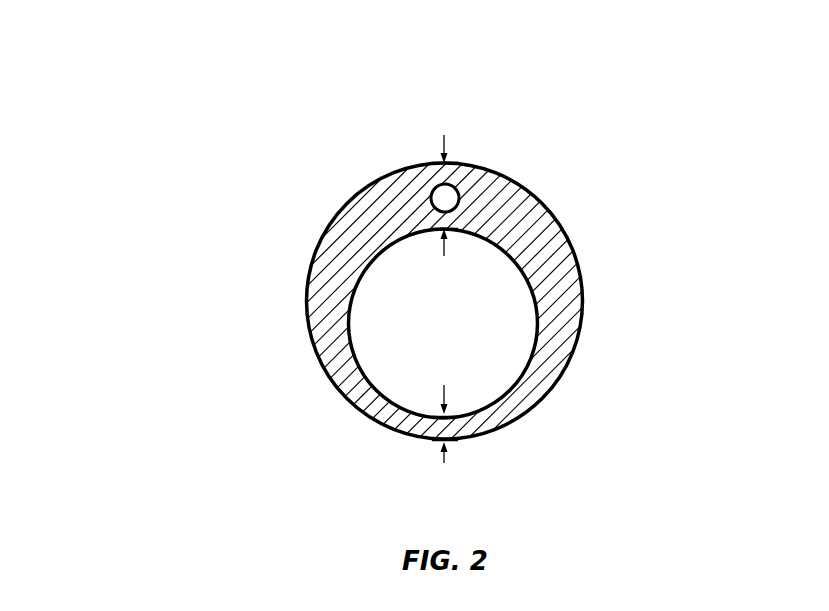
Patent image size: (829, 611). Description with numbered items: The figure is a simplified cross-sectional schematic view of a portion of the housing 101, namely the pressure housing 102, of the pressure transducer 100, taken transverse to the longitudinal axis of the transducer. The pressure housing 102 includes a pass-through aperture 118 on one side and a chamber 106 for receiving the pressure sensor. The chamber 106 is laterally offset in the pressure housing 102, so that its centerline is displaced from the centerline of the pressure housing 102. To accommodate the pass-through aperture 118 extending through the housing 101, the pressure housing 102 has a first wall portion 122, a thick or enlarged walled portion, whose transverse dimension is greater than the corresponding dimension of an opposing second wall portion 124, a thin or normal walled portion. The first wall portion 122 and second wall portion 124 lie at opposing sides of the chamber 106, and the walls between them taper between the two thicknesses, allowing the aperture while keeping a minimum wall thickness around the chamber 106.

The pressure transducer 100 is at (220, 128).
The housing 101 is at (318, 264).
The pressure housing 102 is at (330, 297).
The chamber 106 is at (480, 394).
The pass-through aperture 118 is at (460, 198).
The first wall portion 122 is at (403, 191).
The second wall portion 124 is at (401, 429).